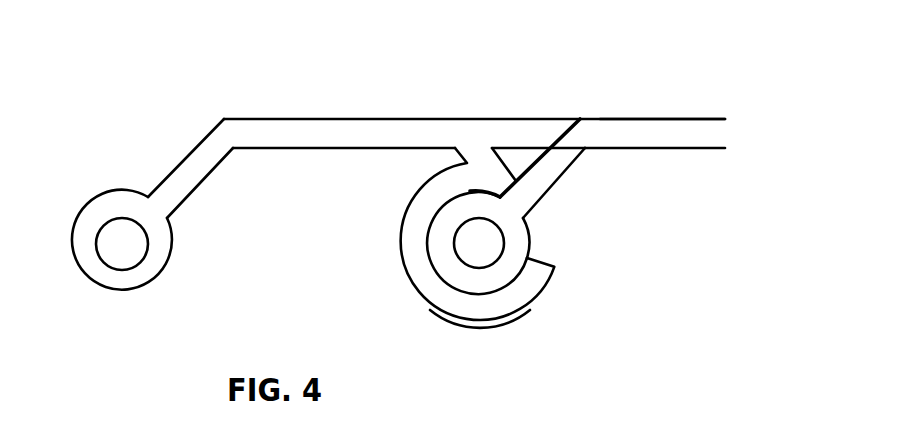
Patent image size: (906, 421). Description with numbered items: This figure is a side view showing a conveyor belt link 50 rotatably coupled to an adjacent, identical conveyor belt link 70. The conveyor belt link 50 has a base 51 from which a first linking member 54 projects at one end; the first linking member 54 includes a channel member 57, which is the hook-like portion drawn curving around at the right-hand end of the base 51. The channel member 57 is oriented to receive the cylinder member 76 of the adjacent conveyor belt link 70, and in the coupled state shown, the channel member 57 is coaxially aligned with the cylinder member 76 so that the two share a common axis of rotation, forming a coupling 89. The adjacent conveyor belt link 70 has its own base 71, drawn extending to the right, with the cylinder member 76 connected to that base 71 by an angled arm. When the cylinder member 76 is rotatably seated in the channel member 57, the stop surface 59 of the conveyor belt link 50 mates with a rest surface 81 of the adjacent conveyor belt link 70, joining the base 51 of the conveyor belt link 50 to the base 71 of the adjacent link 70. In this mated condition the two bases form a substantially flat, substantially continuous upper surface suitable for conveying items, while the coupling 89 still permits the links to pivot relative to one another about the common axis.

The conveyor belt link 50 is at (304, 97).
The base 51 is at (373, 133).
The first linking member 54 is at (549, 119).
The channel member 57 is at (403, 268).
The stop surface 59 is at (566, 132).
The adjacent conveyor belt link 70 is at (634, 97).
The base 71 is at (680, 132).
The cylinder member 76 is at (522, 238).
The rest surface 81 is at (548, 143).
The coupling 89 is at (514, 328).